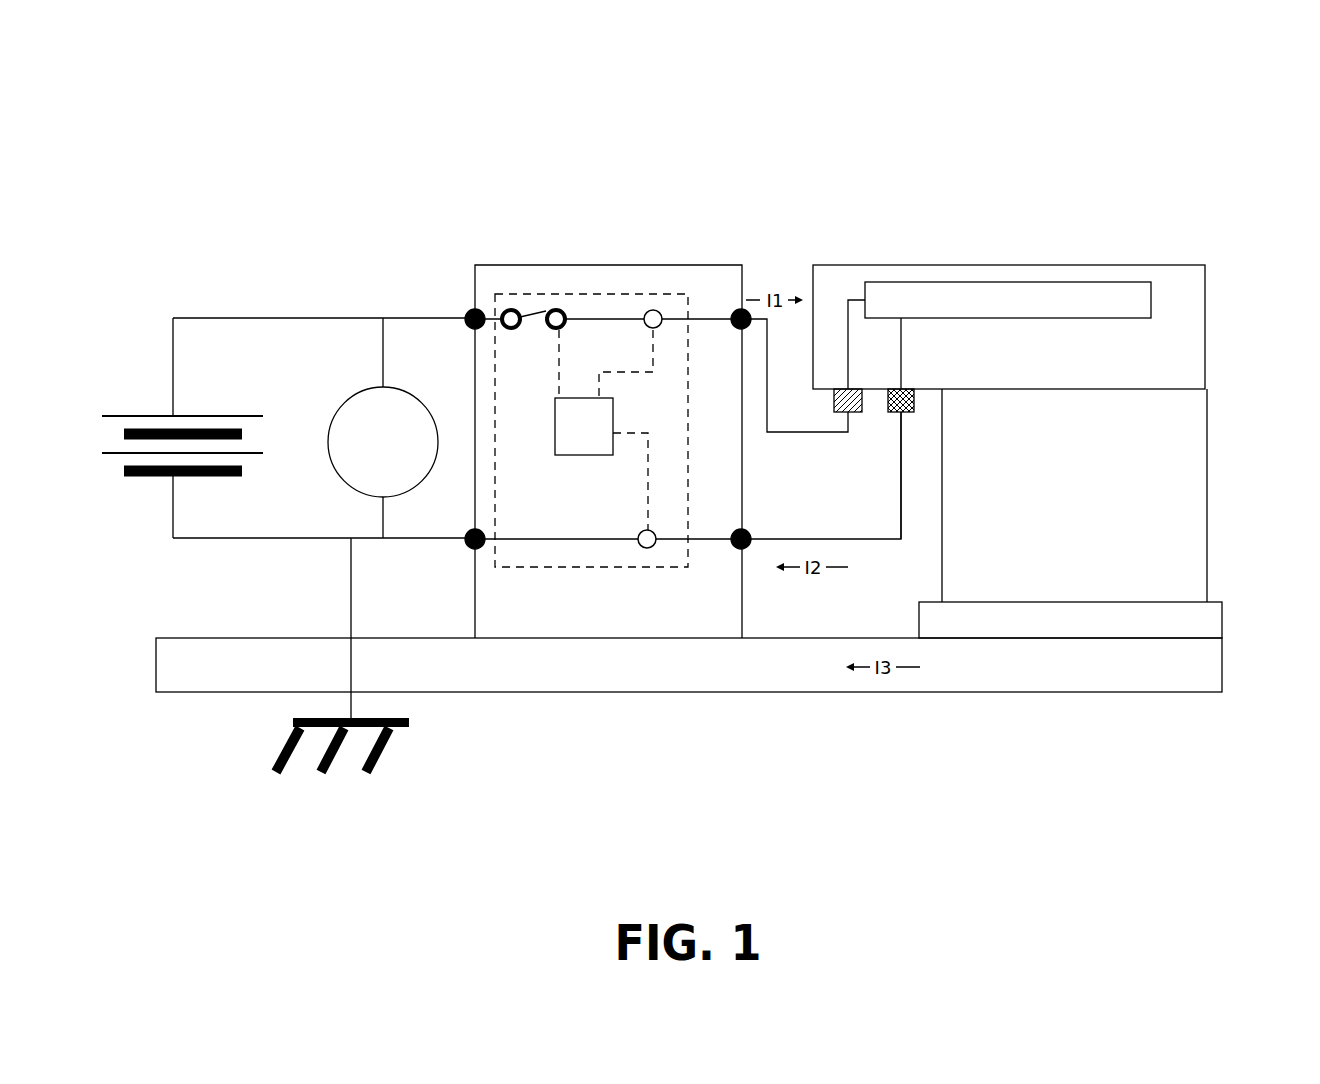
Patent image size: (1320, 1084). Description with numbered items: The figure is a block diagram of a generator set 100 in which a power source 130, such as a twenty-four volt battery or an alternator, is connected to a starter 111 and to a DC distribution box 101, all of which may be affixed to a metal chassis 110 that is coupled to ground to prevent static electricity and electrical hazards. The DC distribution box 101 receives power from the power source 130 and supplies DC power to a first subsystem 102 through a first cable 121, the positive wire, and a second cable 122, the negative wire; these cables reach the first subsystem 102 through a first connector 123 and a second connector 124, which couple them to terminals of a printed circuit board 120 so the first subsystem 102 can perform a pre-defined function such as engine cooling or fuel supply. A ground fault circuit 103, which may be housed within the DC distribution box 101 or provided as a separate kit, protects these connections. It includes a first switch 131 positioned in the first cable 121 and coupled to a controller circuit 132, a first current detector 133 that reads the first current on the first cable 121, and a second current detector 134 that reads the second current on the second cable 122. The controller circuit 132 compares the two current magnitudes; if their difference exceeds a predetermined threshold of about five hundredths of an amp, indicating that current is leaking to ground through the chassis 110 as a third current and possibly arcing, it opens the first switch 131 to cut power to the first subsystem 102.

The generator set 100 is at (1116, 84).
The DC distribution box 101 is at (582, 263).
The first subsystem 102 is at (1165, 305).
The ground fault circuit 103 is at (511, 293).
The chassis 110 is at (1223, 638).
The starter 111 is at (343, 403).
The printed circuit board 120 is at (930, 282).
The first cable 121 is at (769, 432).
The second cable 122 is at (882, 542).
The first connector 123 is at (864, 414).
The second connector 124 is at (914, 412).
The power source 130 is at (168, 415).
The first switch 131 is at (543, 312).
The controller circuit 132 is at (588, 455).
The first current detector 133 is at (663, 319).
The second current detector 134 is at (636, 543).